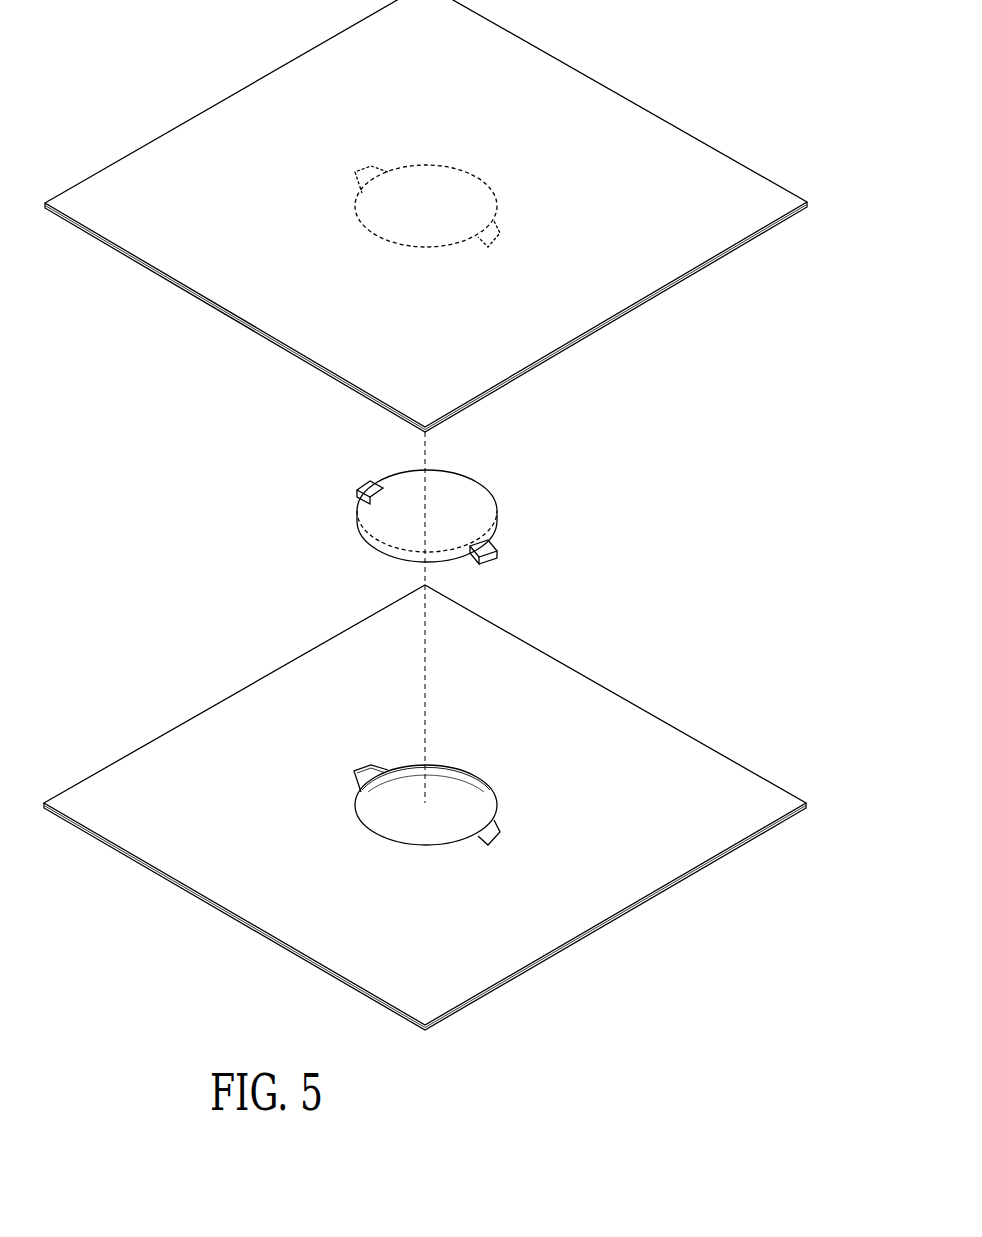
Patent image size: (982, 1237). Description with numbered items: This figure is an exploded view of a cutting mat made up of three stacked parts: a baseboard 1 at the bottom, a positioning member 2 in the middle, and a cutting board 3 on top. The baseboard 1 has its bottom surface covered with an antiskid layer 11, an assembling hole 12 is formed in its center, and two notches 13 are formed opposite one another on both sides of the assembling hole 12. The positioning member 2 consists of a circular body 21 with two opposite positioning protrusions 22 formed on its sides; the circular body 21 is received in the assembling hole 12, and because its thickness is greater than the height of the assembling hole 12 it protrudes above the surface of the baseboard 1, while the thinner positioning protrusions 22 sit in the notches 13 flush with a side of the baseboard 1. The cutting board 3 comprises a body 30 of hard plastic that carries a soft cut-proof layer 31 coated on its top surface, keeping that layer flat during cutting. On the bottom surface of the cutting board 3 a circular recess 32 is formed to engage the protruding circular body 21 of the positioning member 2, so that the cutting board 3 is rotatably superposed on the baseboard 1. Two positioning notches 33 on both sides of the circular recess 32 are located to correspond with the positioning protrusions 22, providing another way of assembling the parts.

The baseboard 1 is at (425, 813).
The antiskid layer 11 is at (533, 972).
The assembling hole 12 is at (453, 798).
The notches 13 is at (488, 826).
The positioning member 2 is at (433, 509).
The circular body 21 is at (390, 518).
The positioning protrusions 22 is at (367, 492).
The cutting board 3 is at (426, 216).
The body 30 is at (725, 260).
The cut-proof layer 31 is at (722, 178).
The circular recess 32 is at (483, 183).
The positioning notches 33 is at (493, 217).